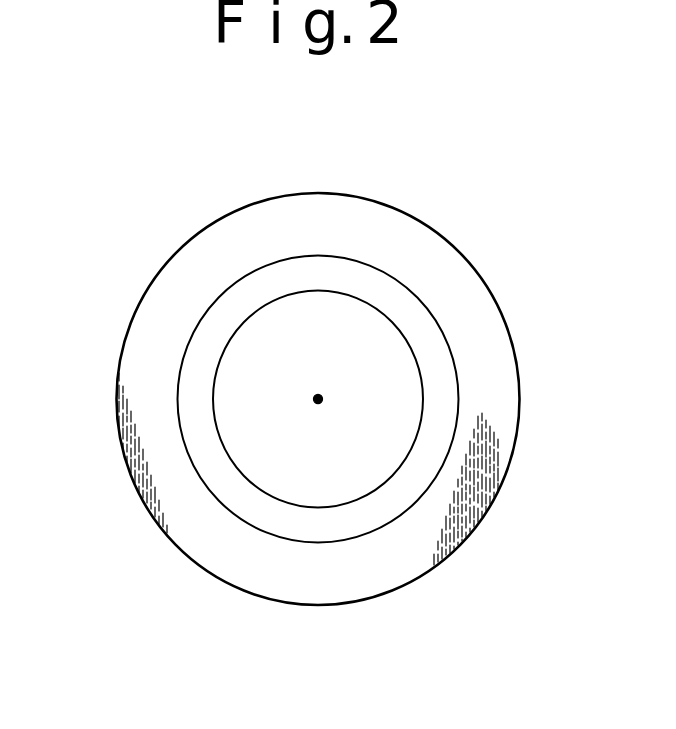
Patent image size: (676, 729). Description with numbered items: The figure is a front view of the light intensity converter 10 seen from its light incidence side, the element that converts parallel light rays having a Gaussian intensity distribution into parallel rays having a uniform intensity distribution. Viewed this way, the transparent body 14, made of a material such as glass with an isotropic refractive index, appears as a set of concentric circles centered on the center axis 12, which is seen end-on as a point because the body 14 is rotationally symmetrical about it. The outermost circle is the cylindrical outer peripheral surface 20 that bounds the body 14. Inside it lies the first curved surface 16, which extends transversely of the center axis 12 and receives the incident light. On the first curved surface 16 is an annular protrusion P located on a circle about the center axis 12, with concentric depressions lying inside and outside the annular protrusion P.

The light intensity converter 10 is at (422, 190).
The center axis 12 is at (320, 397).
The transparent body 14 is at (328, 213).
The first curved surface 16 is at (148, 358).
The cylindrical outer peripheral surface 20 is at (197, 237).
The annular protrusion P is at (395, 323).